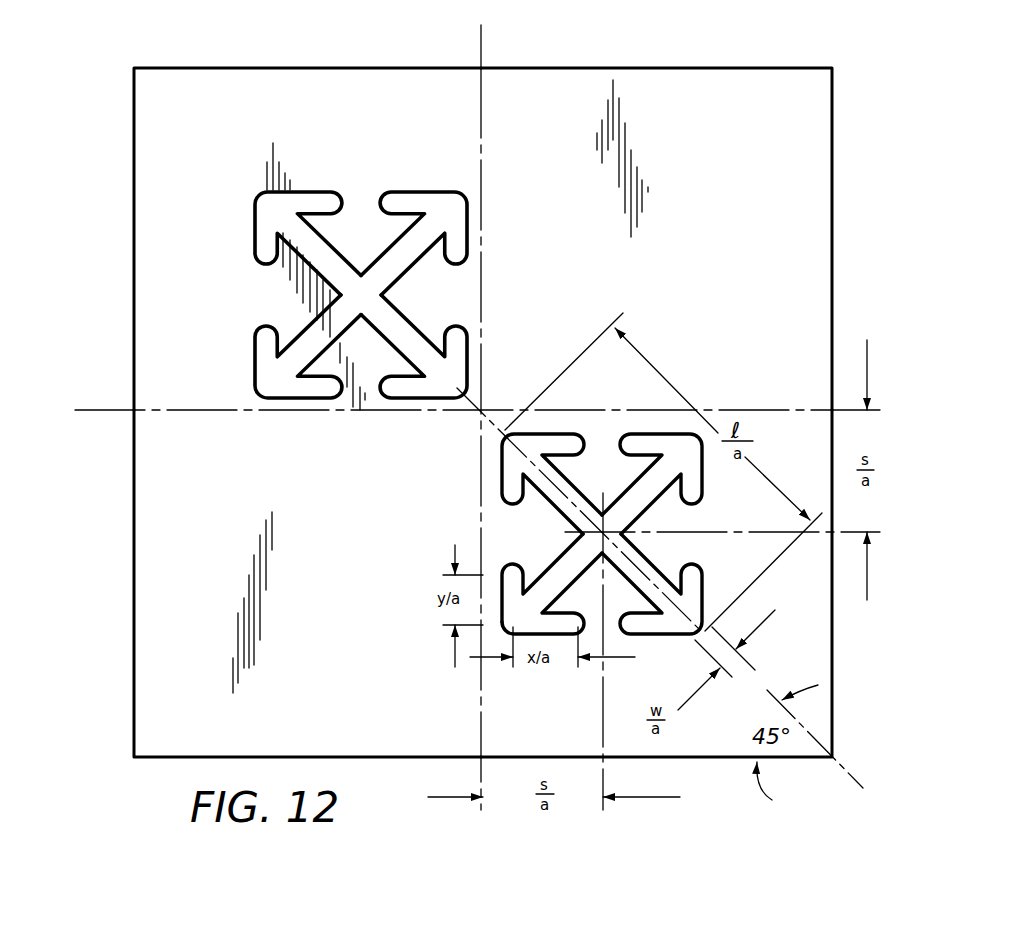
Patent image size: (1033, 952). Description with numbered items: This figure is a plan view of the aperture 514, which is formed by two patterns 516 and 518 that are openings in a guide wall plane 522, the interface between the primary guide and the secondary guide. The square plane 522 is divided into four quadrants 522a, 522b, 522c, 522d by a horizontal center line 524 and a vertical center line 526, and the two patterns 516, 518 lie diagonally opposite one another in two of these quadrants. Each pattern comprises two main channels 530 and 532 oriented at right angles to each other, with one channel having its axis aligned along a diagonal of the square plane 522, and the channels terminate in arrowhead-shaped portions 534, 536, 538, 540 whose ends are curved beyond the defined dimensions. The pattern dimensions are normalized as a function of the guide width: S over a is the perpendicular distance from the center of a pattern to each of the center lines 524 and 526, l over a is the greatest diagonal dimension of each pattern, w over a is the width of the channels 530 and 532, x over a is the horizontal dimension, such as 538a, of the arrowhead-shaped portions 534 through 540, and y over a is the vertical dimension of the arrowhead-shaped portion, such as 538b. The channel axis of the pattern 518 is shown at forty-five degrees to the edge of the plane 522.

The aperture 514 is at (557, 49).
The pattern 516 is at (383, 176).
The pattern 518 is at (766, 514).
The guide wall plane 522 is at (836, 188).
The quadrant 522a is at (692, 96).
The quadrant 522b is at (805, 640).
The quadrant 522c is at (170, 622).
The quadrant 522d is at (157, 148).
The horizontal center line 524 is at (549, 411).
The vertical center line 526 is at (481, 222).
The main channel 530 is at (658, 584).
The main channel 532 is at (653, 472).
The arrowhead-shaped portion 534 is at (675, 447).
The arrowhead-shaped portion 536 is at (728, 598).
The arrowhead-shaped portion 538 is at (517, 570).
The horizontal dimension of arrowhead-shaped portion 538a is at (570, 593).
The vertical dimension of arrowhead-shaped portion 538b is at (542, 566).
The arrowhead-shaped portion 540 is at (501, 484).